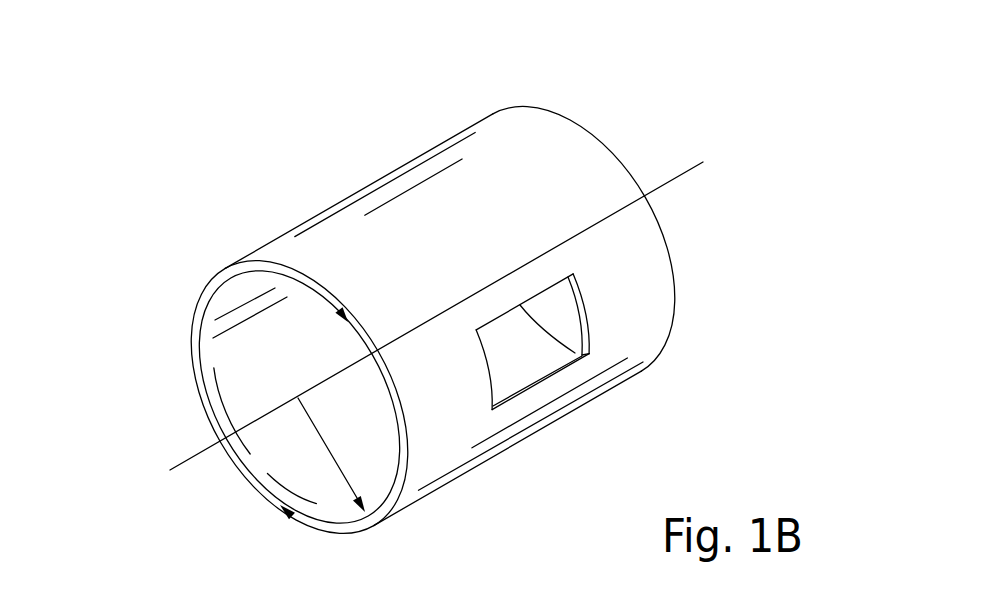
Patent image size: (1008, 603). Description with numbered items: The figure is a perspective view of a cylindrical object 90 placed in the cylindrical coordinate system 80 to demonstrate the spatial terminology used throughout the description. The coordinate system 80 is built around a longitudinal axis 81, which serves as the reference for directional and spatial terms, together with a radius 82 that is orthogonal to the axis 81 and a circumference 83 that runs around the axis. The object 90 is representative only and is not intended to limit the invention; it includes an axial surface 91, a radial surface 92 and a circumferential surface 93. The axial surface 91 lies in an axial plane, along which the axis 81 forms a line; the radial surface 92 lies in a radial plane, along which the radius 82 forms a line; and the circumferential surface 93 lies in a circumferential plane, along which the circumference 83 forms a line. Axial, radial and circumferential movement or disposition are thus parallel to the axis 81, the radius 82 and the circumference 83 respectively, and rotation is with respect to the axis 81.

The cylindrical coordinate system 80 is at (612, 122).
The longitudinal axis 81 is at (183, 463).
The radius 82 is at (337, 460).
The circumference 83 is at (202, 292).
The object 90 is at (475, 104).
The axial surface 91 is at (554, 363).
The radial surface 92 is at (314, 520).
The circumferential surface 93 is at (409, 208).